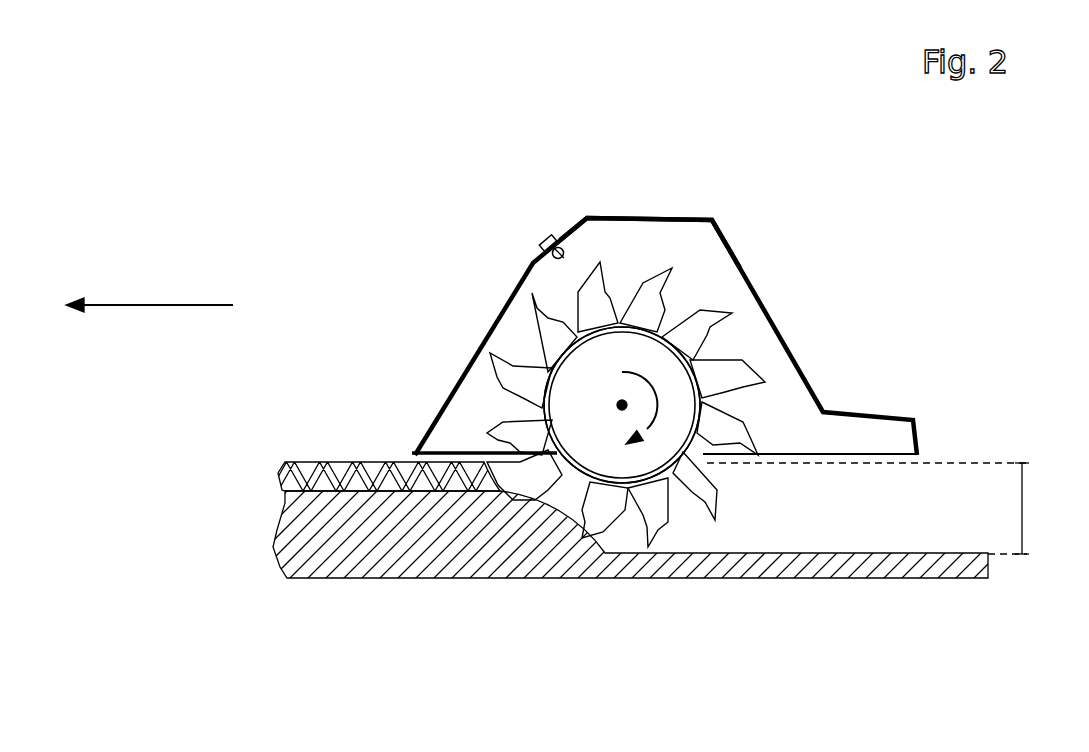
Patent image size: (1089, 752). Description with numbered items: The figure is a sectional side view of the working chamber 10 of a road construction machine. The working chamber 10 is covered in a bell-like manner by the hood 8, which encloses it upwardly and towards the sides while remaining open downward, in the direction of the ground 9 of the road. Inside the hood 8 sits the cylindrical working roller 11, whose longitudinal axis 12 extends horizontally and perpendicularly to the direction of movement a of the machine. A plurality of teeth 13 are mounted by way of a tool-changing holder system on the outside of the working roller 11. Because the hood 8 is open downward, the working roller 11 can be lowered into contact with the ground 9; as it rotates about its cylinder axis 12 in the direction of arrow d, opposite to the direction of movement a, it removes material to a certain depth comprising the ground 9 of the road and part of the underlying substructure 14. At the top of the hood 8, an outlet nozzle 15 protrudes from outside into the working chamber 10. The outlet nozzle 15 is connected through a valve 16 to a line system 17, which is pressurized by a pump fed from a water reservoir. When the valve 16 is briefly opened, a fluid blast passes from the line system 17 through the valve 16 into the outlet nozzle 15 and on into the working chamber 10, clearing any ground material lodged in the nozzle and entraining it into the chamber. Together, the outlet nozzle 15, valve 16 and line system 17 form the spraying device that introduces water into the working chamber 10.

The hood 8 is at (805, 372).
The ground 9 is at (292, 462).
The working chamber 10 is at (718, 262).
The working roller 11 is at (610, 458).
The longitudinal axis 12 is at (622, 405).
The teeth 13 is at (658, 505).
The substructure 14 is at (292, 540).
The outlet nozzle 15 is at (560, 246).
The valve 16 is at (553, 247).
The line system 17 is at (545, 242).
The direction of rotation arrow d is at (658, 422).
The direction of movement a is at (149, 317).